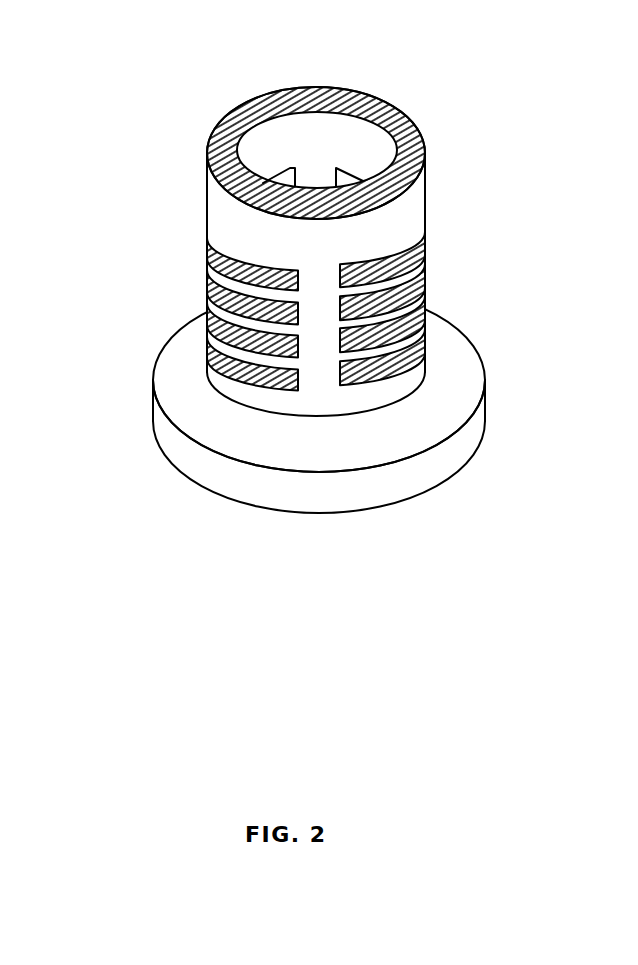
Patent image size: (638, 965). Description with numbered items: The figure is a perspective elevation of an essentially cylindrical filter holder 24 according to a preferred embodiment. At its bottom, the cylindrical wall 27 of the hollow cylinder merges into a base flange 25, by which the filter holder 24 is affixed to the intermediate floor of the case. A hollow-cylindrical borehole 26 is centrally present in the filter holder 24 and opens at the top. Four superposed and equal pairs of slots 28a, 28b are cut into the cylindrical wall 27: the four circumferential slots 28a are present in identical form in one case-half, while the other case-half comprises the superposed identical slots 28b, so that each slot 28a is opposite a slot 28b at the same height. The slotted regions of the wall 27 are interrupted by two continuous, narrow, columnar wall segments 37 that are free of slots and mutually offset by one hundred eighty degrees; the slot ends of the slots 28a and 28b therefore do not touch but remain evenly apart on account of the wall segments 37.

The filter holder 24 is at (325, 530).
The base flange 25 is at (393, 434).
The hollow-cylindrical borehole 26 is at (304, 275).
The cylindrical wall 27 is at (424, 134).
The slots 28a is at (425, 229).
The slots 28b is at (207, 238).
The wall segments 37 is at (314, 366).